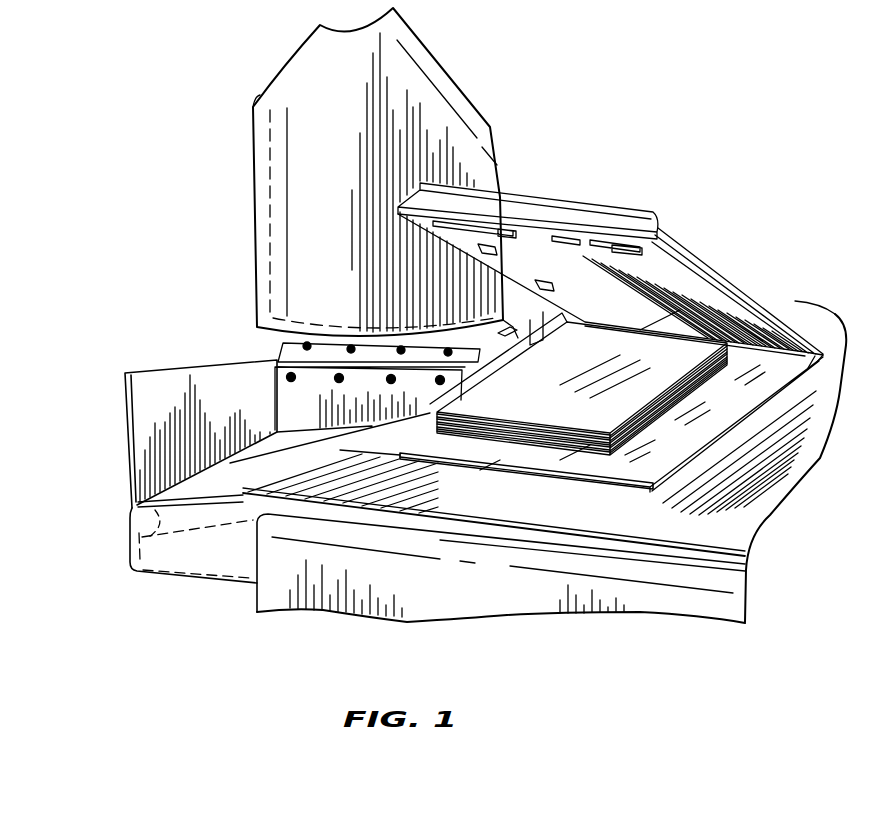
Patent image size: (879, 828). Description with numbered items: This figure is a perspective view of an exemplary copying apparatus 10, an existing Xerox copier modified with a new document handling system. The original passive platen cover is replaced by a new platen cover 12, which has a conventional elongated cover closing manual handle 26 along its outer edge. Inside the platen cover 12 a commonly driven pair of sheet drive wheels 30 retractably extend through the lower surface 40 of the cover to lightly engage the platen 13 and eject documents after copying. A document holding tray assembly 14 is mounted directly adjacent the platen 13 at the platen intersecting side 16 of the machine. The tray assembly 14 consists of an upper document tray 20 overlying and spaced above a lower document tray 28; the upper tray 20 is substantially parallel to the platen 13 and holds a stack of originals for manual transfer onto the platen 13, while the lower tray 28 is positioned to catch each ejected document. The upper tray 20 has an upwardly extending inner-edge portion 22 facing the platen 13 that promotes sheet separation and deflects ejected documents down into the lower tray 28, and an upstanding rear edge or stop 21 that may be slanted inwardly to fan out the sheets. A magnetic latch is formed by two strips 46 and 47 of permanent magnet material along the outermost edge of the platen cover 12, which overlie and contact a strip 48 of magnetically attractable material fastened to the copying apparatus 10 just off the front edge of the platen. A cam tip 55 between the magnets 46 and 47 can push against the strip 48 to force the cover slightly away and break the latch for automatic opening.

The copying apparatus 10 is at (692, 152).
The platen cover 12 is at (747, 292).
The platen 13 is at (600, 463).
The document holding tray assembly 14 is at (126, 417).
The platen intersecting side 16 is at (255, 593).
The upper document tray 20 is at (270, 215).
The rear edge or stop 21 is at (522, 318).
The inner-edge portion 22 is at (440, 63).
The cover closing manual handle 26 is at (598, 210).
The lower document tray 28 is at (153, 488).
The sheet drive wheels 30 is at (498, 254).
The lower surface of the platen cover 40 is at (660, 290).
The permanent magnet strip 46 is at (490, 230).
The permanent magnet strip 47 is at (612, 242).
The strip of magnetically attractable material 48 is at (487, 465).
The cam tip 55 is at (560, 236).